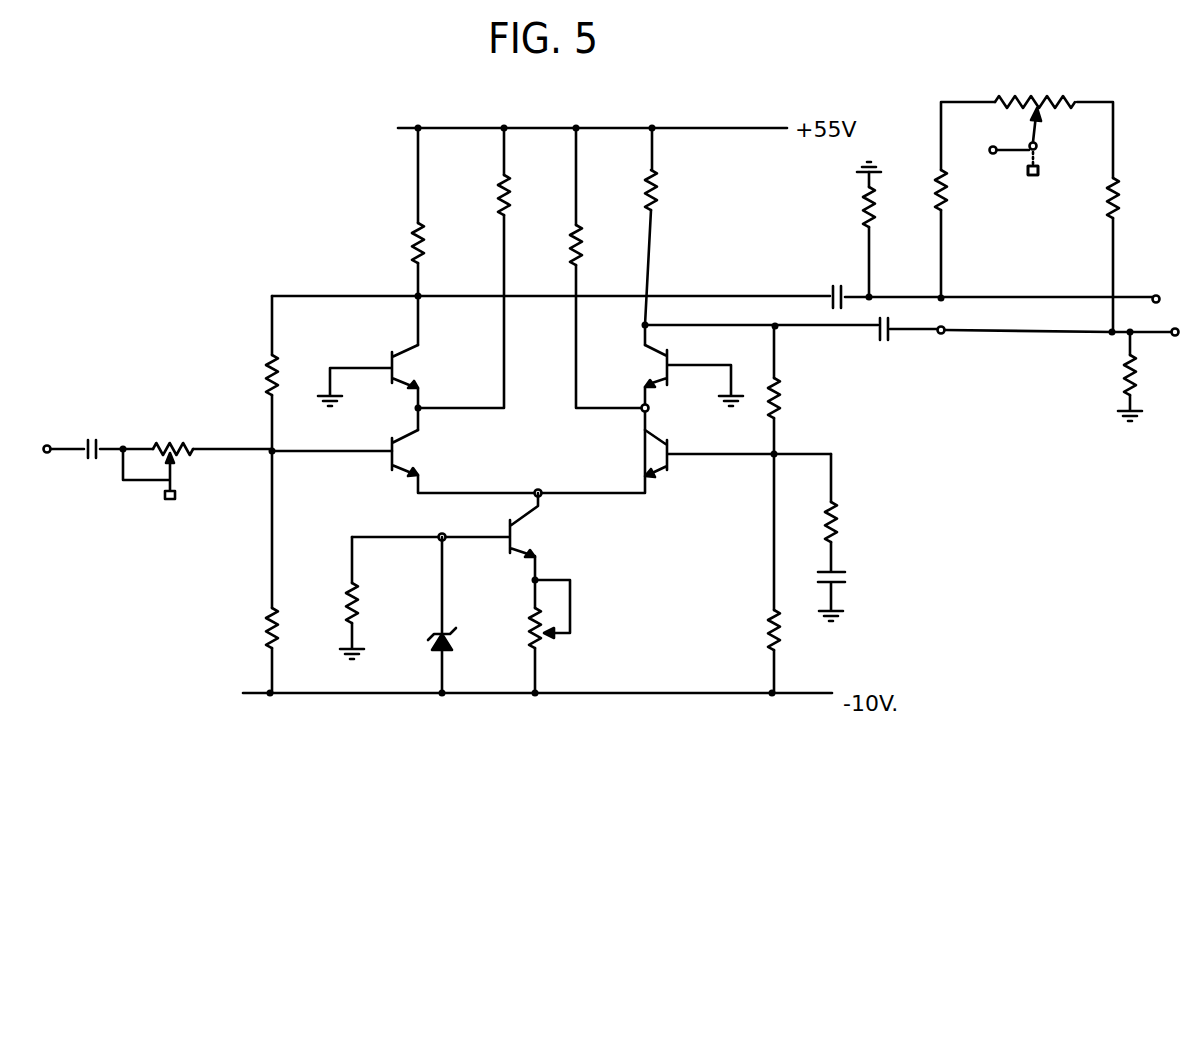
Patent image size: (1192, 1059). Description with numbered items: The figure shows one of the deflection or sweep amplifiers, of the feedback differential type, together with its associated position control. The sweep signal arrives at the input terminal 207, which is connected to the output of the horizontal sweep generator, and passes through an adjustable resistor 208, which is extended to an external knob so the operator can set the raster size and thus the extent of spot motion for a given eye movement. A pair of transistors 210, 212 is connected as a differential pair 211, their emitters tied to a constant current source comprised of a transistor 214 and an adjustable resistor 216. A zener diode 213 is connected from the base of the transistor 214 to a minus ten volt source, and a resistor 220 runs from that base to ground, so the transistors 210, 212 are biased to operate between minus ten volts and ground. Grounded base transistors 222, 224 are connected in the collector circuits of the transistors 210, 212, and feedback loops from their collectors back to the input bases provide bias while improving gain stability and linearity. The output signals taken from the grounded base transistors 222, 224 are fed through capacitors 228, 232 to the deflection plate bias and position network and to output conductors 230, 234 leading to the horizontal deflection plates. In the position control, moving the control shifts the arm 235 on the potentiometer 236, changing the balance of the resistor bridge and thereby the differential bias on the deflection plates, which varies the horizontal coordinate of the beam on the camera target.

The input terminal 207 is at (60, 413).
The adjustable resistor 208 is at (176, 437).
The transistor 210 is at (420, 453).
The differential amplifier 211 is at (538, 467).
The transistor 212 is at (738, 448).
The zener diode 213 is at (483, 618).
The transistor 214 is at (465, 525).
The adjustable resistor 216 is at (562, 624).
The resistor 220 is at (404, 585).
The grounded base transistor 222 is at (383, 375).
The grounded base transistor 224 is at (694, 369).
The capacitor 228 is at (839, 287).
The output conductor 230 is at (912, 296).
The capacitor 232 is at (880, 346).
The output conductor 234 is at (941, 334).
The arm 235 is at (1044, 135).
The potentiometer 236 is at (1065, 98).